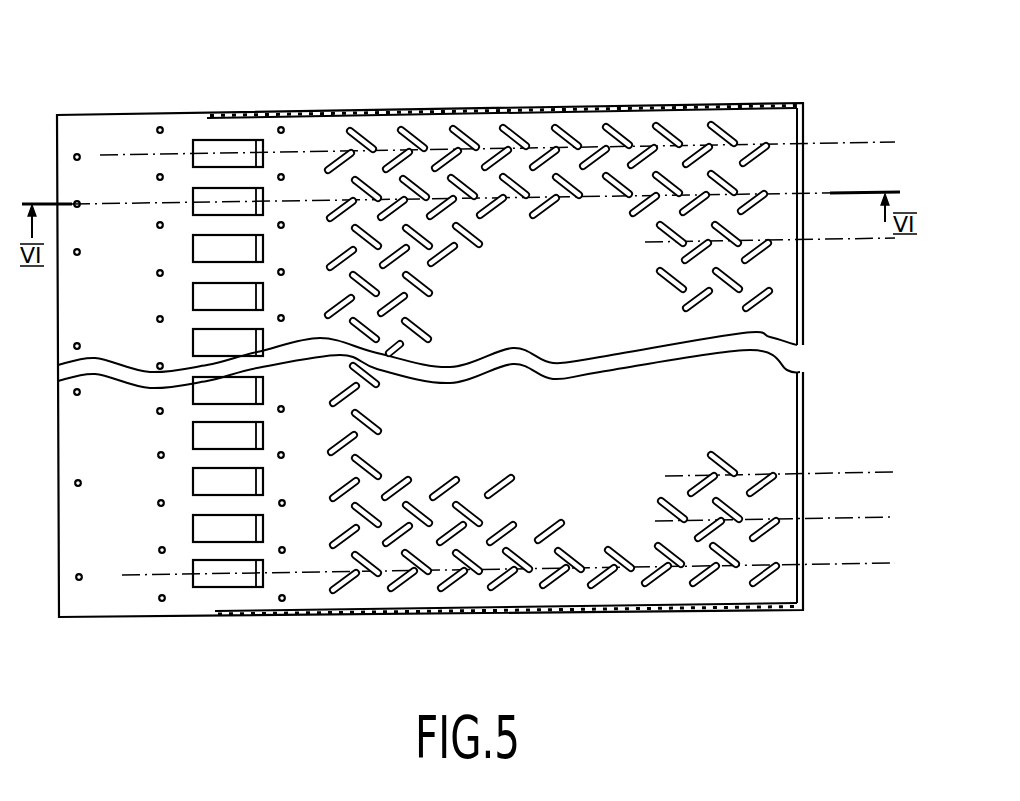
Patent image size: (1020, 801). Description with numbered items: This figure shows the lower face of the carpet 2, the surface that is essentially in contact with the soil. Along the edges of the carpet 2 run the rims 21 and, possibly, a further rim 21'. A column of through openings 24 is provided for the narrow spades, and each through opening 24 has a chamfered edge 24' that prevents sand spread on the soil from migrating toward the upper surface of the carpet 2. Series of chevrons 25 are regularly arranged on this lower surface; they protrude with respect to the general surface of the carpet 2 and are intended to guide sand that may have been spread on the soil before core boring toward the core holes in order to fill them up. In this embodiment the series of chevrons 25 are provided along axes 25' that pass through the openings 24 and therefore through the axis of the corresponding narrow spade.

The carpet 2 is at (106, 137).
The rim 21 is at (502, 359).
The rim 21' is at (831, 355).
The through opening 24 is at (218, 362).
The chamfered edge 24' is at (255, 362).
The chevron 25 is at (593, 358).
The axis 25' is at (490, 355).